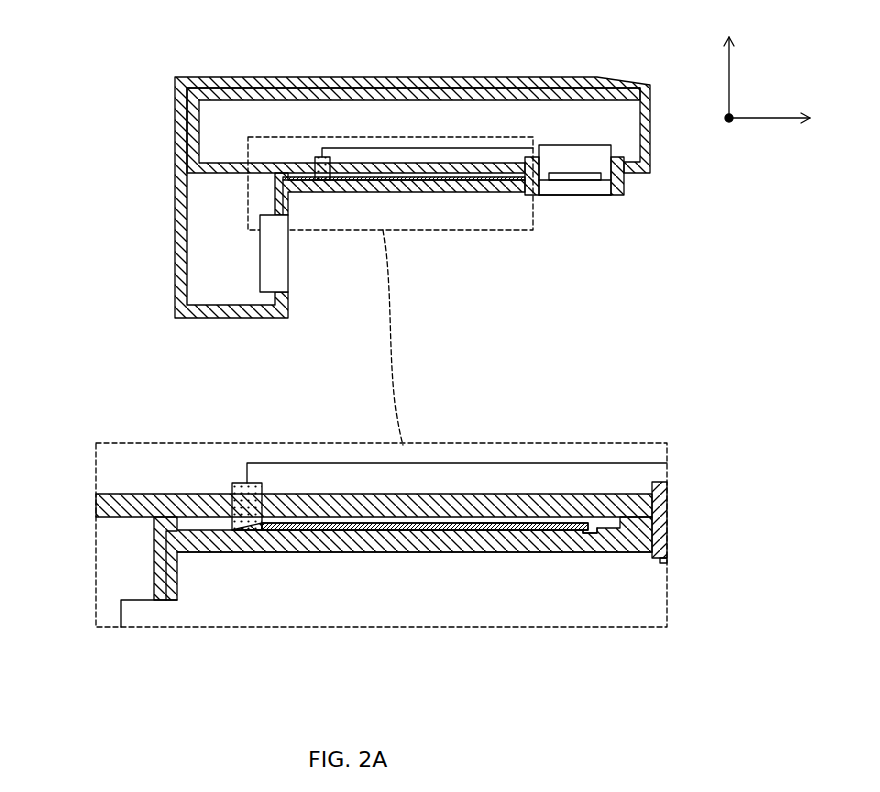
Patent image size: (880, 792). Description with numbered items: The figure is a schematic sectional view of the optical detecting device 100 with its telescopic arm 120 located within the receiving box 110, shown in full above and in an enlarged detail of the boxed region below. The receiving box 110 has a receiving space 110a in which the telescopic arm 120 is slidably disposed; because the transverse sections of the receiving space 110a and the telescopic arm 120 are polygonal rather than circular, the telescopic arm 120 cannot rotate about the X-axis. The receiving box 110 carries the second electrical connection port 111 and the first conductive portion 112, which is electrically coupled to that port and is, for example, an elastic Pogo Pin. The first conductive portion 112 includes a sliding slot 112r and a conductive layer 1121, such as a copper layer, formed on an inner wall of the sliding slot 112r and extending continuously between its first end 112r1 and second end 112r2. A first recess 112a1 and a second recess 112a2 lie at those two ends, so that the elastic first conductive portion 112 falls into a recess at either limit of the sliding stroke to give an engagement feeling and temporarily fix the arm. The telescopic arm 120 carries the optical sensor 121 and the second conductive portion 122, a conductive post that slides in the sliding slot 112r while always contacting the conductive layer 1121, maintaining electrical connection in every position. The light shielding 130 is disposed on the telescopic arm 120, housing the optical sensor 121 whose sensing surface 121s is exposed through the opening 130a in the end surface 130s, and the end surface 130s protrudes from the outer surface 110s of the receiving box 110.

The optical detecting device 100 is at (295, 48).
The receiving box 110 is at (175, 218).
The receiving space 110a is at (470, 130).
The outer surface 110s is at (633, 553).
The second electrical connection port 111 is at (273, 275).
The first conductive portion 112 is at (580, 669).
The conductive layer 1121 is at (564, 529).
The sliding slot 112r is at (498, 522).
The first end 112r1 is at (262, 533).
The second end 112r2 is at (602, 534).
The first recess 112a1 is at (253, 526).
The second recess 112a2 is at (596, 526).
The telescopic arm 120 is at (197, 127).
The optical sensor 121 is at (577, 160).
The sensing surface 121s is at (594, 190).
The second conductive portion 122 is at (233, 488).
The light shielding 130 is at (622, 183).
The opening 130a is at (563, 197).
The end surface 130s is at (617, 198).